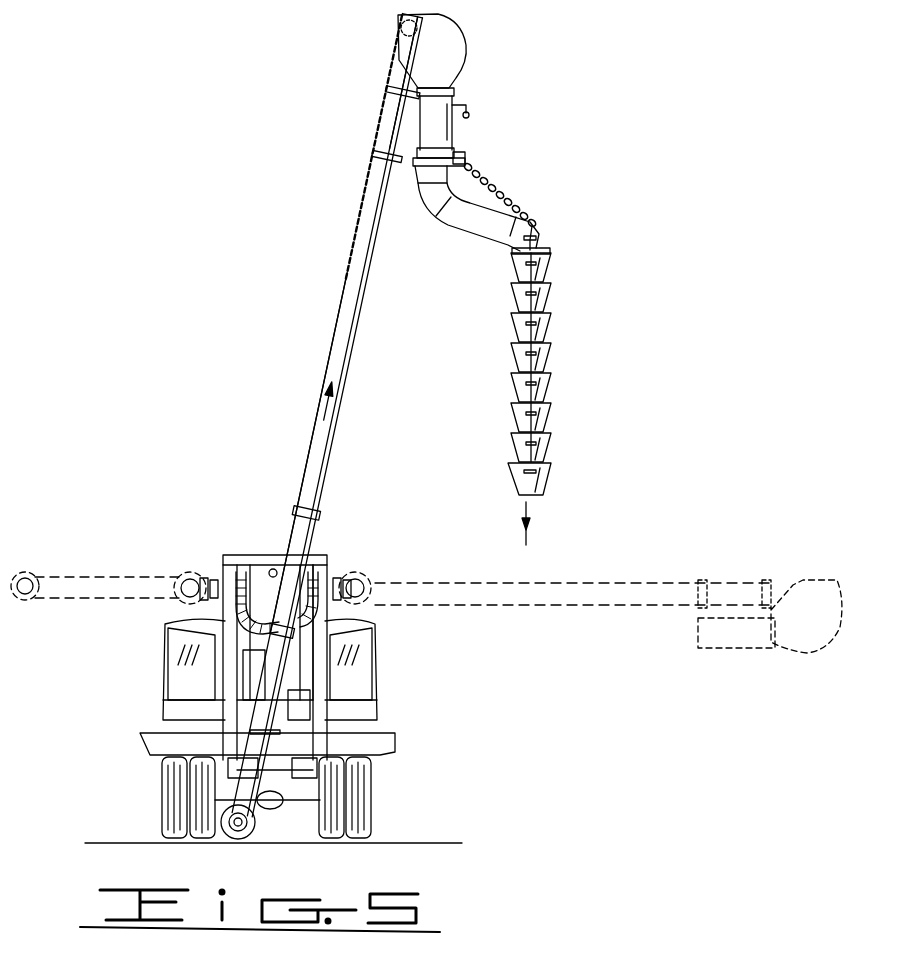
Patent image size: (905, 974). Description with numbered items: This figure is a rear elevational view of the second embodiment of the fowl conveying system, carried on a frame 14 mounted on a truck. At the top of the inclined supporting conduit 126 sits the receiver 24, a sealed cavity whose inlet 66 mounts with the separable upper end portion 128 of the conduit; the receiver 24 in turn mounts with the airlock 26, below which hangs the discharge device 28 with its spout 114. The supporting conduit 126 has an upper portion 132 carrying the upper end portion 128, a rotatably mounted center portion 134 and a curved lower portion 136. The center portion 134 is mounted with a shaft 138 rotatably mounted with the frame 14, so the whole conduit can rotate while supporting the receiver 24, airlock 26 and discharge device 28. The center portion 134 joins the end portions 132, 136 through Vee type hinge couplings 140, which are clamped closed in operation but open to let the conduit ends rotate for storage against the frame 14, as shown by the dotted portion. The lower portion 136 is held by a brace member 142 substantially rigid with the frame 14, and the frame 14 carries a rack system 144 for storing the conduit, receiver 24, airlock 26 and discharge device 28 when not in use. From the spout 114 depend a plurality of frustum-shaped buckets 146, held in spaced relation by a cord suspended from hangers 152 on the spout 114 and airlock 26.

The frame 14 is at (221, 558).
The receiver 24 is at (470, 49).
The airlock 26 is at (457, 128).
The discharge device 28 is at (526, 197).
The inlet 66 is at (403, 73).
The spout 114 is at (489, 243).
The supporting conduit 126 is at (345, 297).
The upper end portion 128 is at (392, 114).
The upper portion 132 is at (366, 230).
The center portion 134 is at (312, 557).
The lower portion 136 is at (78, 583).
The shaft 138 is at (277, 566).
The Vee type hinge coupling 140 is at (322, 517).
The brace member 142 is at (250, 732).
The rack system 144 is at (190, 624).
The buckets 146 is at (554, 291).
The hangers 152 is at (463, 170).